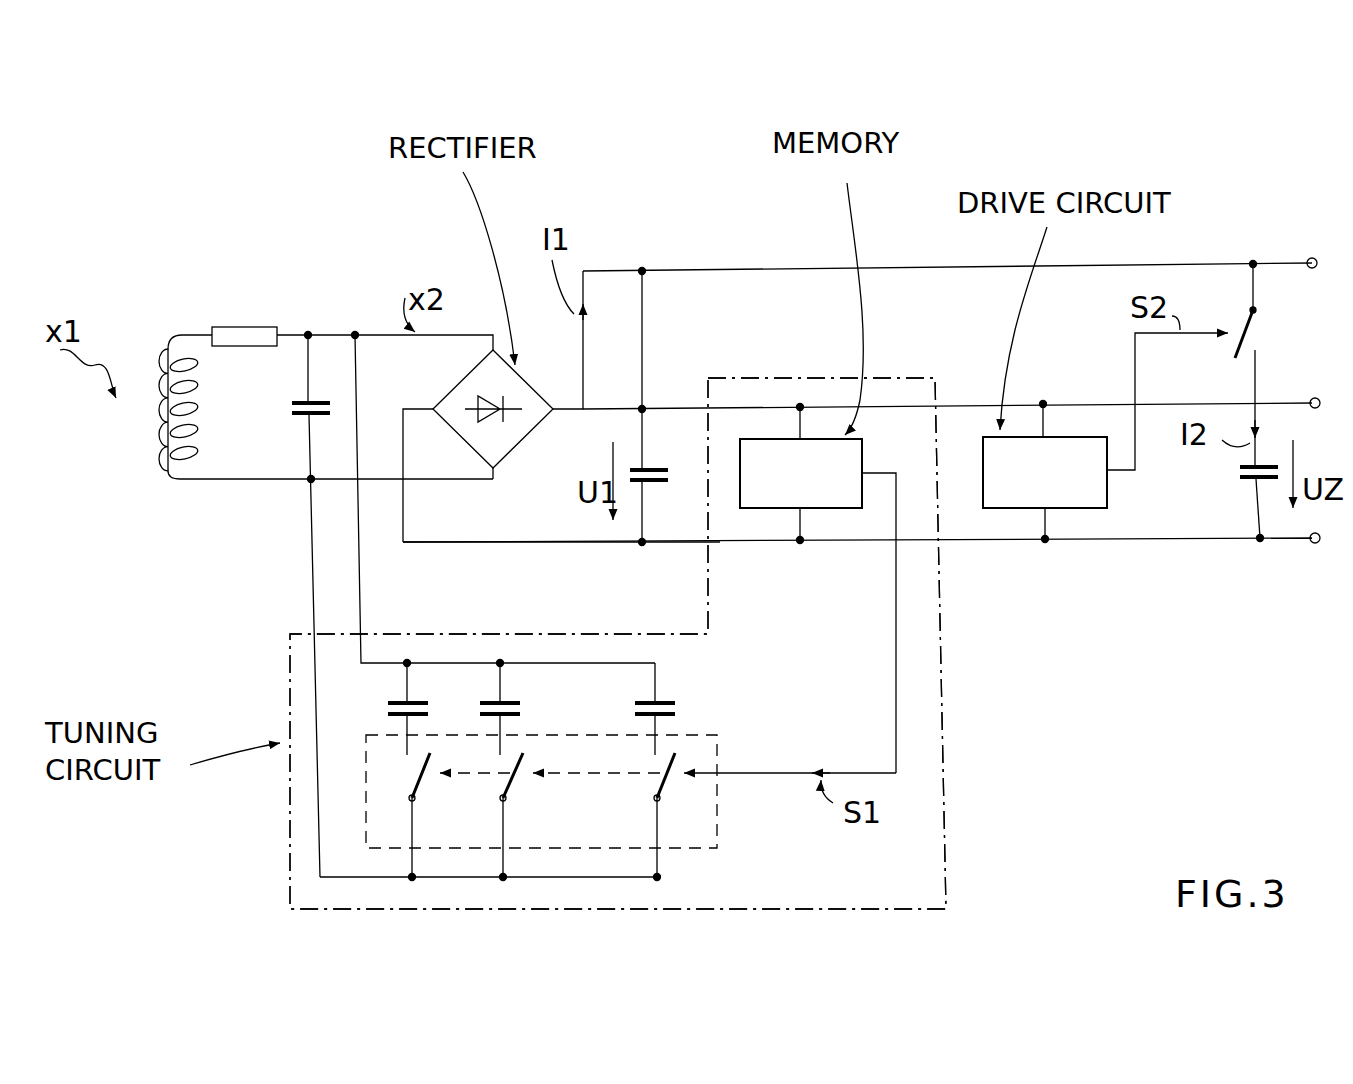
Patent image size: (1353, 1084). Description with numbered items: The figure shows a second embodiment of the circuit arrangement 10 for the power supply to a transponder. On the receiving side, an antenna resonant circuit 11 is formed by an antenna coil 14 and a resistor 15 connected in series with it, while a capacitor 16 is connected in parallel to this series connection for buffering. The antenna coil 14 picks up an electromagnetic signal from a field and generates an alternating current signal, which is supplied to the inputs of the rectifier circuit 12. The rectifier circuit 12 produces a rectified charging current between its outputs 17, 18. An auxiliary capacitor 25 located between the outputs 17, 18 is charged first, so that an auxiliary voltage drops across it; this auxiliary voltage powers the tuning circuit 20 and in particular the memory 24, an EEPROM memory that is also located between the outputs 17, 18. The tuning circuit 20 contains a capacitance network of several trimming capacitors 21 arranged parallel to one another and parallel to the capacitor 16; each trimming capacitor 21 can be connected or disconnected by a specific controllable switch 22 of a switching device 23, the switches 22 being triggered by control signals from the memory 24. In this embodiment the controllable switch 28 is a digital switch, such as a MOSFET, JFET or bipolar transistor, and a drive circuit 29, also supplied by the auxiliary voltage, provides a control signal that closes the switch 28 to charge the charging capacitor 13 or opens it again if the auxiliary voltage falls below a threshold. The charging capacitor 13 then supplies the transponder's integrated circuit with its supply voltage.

The circuit arrangement 10 is at (1050, 668).
The antenna resonant circuit 11 is at (243, 421).
The rectifier circuit 12 is at (531, 441).
The charging capacitor 13 is at (1246, 484).
The antenna coil 14 is at (172, 466).
The resistor 15 is at (233, 323).
The capacitor 16 is at (290, 410).
The output of the rectifier circuit 17 is at (649, 265).
The output of the rectifier circuit 18 is at (645, 549).
The tuning circuit 20 is at (950, 827).
The trimming capacitors 21 is at (402, 702).
The controllable switch 22 is at (426, 786).
The switching device 23 is at (723, 834).
The memory 24 is at (785, 489).
The auxiliary capacitor 25 is at (645, 465).
The controllable switch 28 is at (1254, 337).
The drive circuit 29 is at (1030, 489).